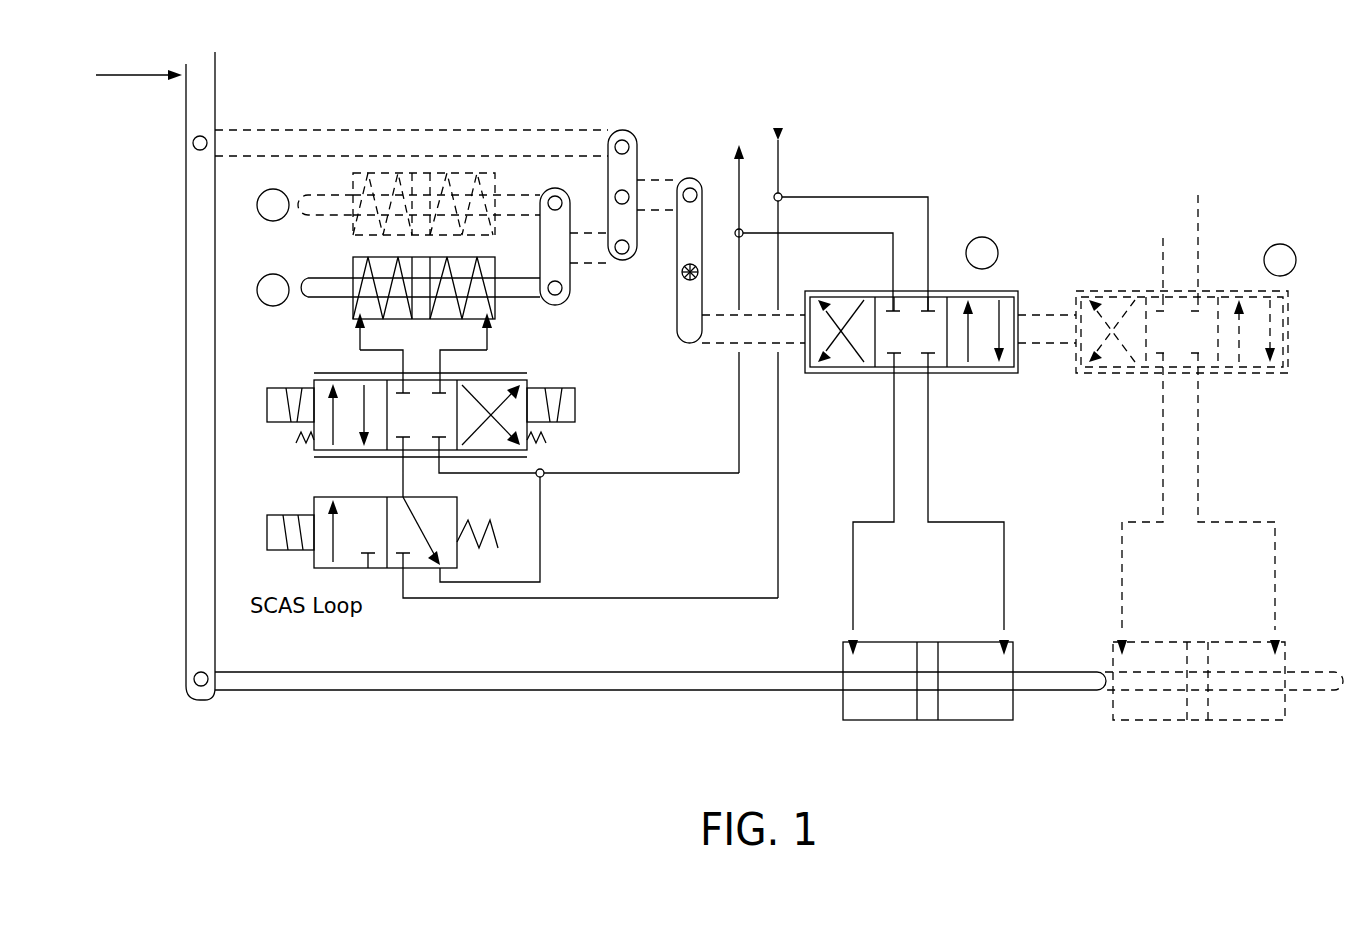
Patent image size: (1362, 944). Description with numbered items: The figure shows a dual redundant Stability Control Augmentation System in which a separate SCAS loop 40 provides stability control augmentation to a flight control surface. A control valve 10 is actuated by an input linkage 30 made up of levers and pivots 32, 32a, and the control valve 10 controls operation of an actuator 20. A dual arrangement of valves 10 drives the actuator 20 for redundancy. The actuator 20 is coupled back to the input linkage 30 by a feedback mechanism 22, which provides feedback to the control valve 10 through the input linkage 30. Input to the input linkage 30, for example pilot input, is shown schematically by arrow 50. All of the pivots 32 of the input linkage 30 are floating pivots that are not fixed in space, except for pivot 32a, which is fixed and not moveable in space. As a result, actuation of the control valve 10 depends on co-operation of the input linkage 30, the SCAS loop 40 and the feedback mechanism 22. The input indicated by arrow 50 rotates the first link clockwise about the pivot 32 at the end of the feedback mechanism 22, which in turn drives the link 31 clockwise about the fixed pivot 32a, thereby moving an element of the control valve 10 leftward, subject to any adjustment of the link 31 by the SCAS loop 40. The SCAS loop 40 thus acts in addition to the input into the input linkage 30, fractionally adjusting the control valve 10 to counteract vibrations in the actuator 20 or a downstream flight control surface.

The control valve 10 is at (1007, 310).
The actuator 20 is at (970, 714).
The feedback mechanism 22 is at (370, 683).
The input linkage 30 is at (200, 250).
The link 31 is at (690, 320).
The pivot 32 is at (204, 137).
The fixed pivot 32a is at (695, 267).
The SCAS loop 40 is at (478, 307).
The arrow 50 is at (130, 76).